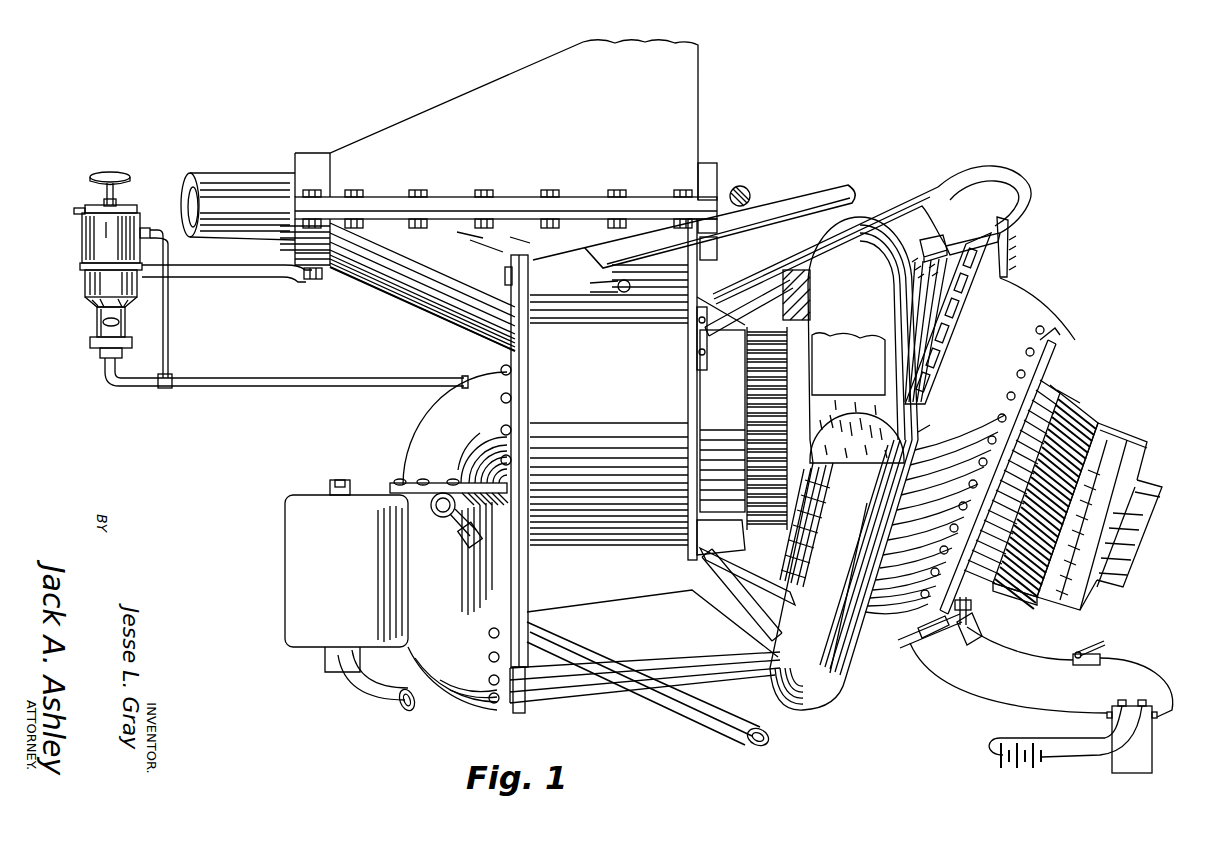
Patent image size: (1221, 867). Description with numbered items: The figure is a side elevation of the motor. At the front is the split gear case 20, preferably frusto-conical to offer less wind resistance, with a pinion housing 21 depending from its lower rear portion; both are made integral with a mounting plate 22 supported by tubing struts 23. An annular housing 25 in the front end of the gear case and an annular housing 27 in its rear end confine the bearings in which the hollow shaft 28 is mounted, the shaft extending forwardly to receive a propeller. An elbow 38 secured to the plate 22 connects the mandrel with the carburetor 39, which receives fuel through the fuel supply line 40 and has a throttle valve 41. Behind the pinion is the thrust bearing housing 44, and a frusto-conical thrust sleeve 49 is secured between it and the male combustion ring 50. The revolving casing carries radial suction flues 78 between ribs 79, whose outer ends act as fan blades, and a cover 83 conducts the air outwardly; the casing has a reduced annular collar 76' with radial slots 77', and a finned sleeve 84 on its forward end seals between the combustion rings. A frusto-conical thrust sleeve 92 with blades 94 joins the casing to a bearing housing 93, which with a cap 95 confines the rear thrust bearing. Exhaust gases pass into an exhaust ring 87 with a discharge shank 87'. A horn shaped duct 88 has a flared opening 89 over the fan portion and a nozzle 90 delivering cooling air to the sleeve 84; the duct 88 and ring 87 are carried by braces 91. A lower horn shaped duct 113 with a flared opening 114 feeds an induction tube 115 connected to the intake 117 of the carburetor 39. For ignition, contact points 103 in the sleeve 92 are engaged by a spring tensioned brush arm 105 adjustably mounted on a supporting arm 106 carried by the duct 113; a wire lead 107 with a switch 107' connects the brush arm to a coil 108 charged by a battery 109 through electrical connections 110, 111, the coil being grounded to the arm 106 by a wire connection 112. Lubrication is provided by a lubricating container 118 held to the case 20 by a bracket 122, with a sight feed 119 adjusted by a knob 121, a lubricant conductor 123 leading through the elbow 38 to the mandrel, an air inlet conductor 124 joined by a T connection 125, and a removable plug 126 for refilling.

The split gear case 20 is at (396, 130).
The pinion housing 21 is at (566, 526).
The mounting plate 22 is at (522, 589).
The tubing struts 23 is at (826, 193).
The annular housing 25 is at (296, 252).
The annular housing 27 is at (722, 172).
The hollow shaft 28 is at (250, 160).
The elbow 38 is at (422, 428).
The carburetor 39 is at (296, 572).
The fuel supply line 40 is at (374, 708).
The throttle valve 41 is at (460, 538).
The thrust bearing housing 44 is at (721, 522).
The thrust sleeve 49 is at (783, 340).
The male combustion ring 50 is at (820, 403).
The reduced annular collar 76' is at (1065, 347).
The radial slots 77' is at (988, 470).
The radial suction flues 78 is at (934, 352).
The ribs 79 is at (944, 334).
The cover 83 is at (1028, 306).
The sleeve 84 is at (791, 564).
The exhaust ring 87 is at (864, 322).
The discharge shank 87' is at (937, 426).
The horn shaped duct 88 is at (1025, 183).
The flared opening 89 is at (1012, 258).
The nozzle 90 is at (961, 188).
The braces 91 is at (906, 201).
The thrust sleeve 92 is at (1062, 392).
The bearing housing 93 is at (1117, 444).
The blades 94 is at (1010, 596).
The cap 95 is at (1164, 500).
The contact points 103 is at (968, 598).
The brush arm 105 is at (976, 624).
The supporting arm 106 is at (937, 646).
The wire lead 107 is at (1140, 679).
The switch 107' is at (1036, 645).
The coil 108 is at (1153, 745).
The battery 109 is at (1038, 768).
The electrical connection 110 is at (1047, 737).
The electrical connection 111 is at (1056, 759).
The wire connection 112 is at (969, 685).
The horn shaped duct 113 is at (813, 701).
The flared opening 114 is at (895, 500).
The induction tube 115 is at (556, 700).
The intake 117 is at (478, 697).
The lubricating container 118 is at (81, 245).
The sight feed 119 is at (96, 333).
The knob 121 is at (105, 171).
The bracket 122 is at (205, 278).
The lubricant conductor 123 is at (304, 379).
The air inlet conductor 124 is at (168, 335).
The T connection 125 is at (172, 378).
The removable plug 126 is at (80, 210).